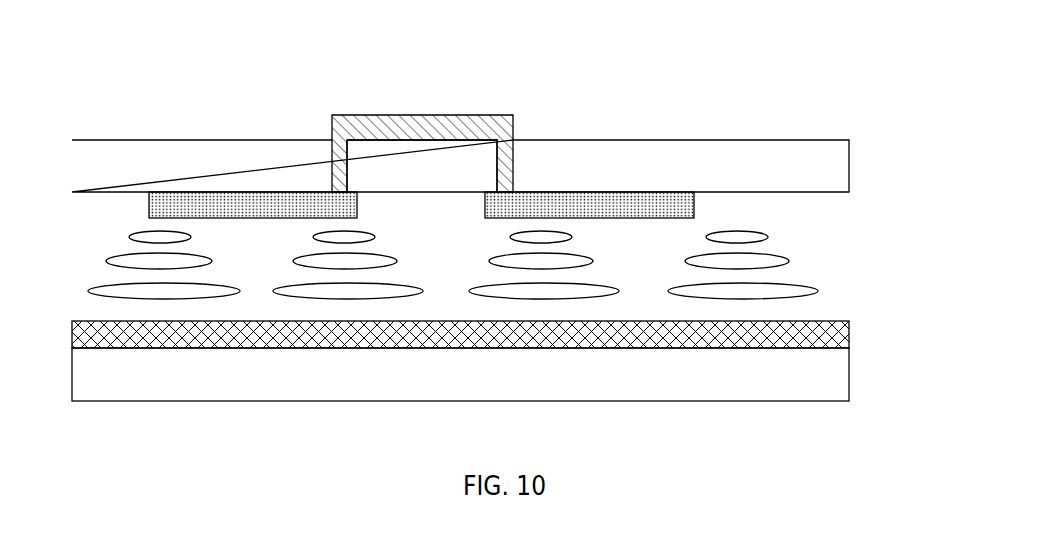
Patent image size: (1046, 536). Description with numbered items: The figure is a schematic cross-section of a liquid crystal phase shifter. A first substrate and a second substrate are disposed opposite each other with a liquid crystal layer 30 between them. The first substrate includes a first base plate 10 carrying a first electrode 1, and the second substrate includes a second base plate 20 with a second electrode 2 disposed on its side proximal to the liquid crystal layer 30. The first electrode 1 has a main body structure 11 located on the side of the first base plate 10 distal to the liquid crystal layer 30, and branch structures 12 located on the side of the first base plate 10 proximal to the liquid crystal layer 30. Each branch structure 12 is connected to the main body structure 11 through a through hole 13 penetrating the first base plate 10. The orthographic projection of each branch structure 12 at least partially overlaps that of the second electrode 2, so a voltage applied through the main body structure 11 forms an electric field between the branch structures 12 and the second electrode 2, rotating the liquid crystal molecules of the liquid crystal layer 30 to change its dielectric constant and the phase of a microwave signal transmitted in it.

The first electrode 1 is at (421, 128).
The first base plate 10 is at (822, 157).
The main body structure 11 is at (462, 115).
The branch structure 12 is at (565, 204).
The through hole 13 is at (347, 149).
The liquid crystal layer 30 is at (818, 245).
The second electrode 2 is at (822, 327).
The second base plate 20 is at (822, 375).